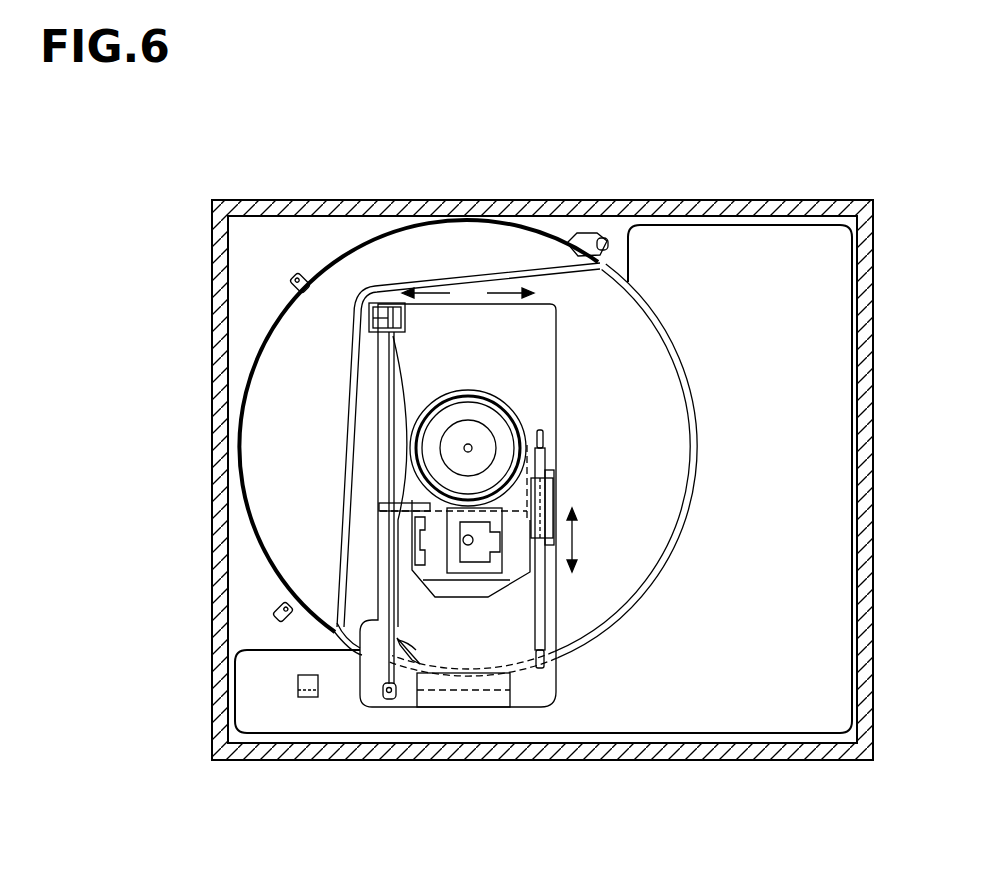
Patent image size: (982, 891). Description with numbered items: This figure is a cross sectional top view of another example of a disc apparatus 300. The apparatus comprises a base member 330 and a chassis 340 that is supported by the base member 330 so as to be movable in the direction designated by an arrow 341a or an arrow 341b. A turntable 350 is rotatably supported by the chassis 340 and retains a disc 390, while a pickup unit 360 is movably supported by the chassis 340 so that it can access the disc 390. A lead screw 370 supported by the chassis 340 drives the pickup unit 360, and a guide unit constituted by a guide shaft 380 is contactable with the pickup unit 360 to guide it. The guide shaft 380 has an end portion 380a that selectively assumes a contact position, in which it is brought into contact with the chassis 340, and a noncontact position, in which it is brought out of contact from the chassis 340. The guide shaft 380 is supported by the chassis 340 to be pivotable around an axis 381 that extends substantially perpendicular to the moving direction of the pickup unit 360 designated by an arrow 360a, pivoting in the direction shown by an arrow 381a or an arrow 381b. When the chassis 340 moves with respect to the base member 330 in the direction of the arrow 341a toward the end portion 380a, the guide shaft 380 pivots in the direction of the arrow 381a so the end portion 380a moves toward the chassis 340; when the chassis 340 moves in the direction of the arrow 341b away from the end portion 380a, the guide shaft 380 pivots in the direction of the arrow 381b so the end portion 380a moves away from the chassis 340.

The disc apparatus 300 is at (553, 100).
The base member 330 is at (765, 213).
The chassis 340 is at (570, 391).
The arrow 341a is at (430, 293).
The arrow 341b is at (505, 293).
The turntable 350 is at (492, 398).
The pickup unit 360 is at (514, 517).
The arrow 360a is at (580, 540).
The lead screw 370 is at (540, 600).
The guide shaft 380 is at (360, 426).
The end portion 380a is at (368, 315).
The axis 381 is at (384, 700).
The arrow 381a is at (420, 654).
The arrow 381b is at (362, 652).
The disc 390 is at (680, 371).